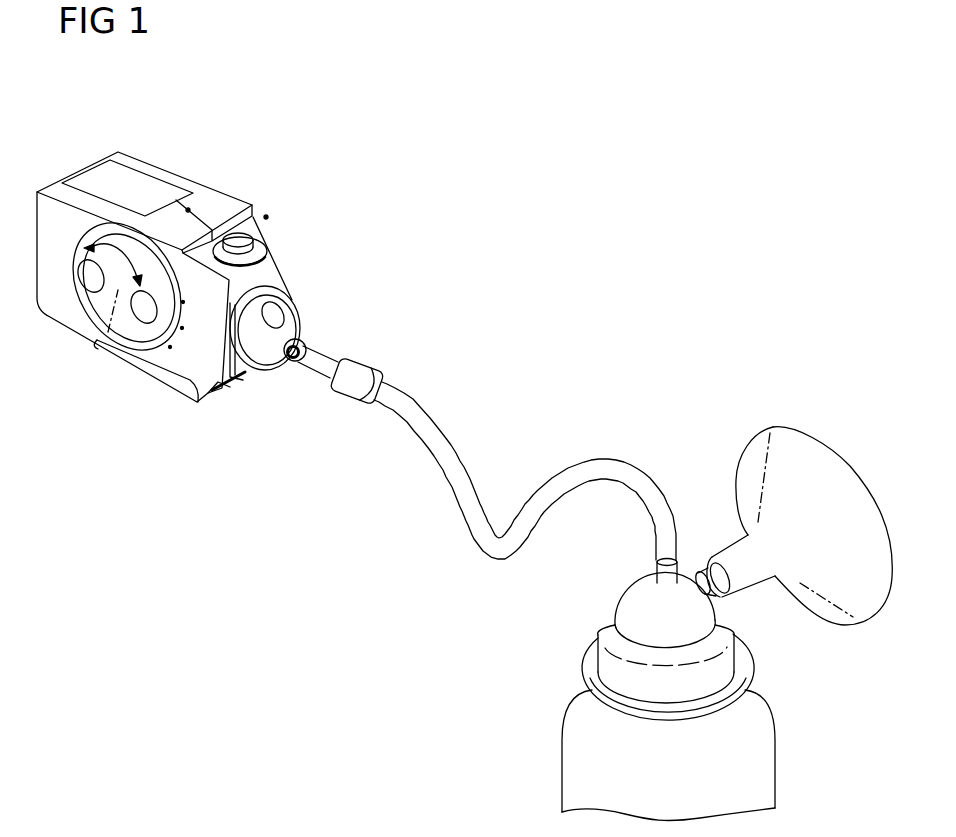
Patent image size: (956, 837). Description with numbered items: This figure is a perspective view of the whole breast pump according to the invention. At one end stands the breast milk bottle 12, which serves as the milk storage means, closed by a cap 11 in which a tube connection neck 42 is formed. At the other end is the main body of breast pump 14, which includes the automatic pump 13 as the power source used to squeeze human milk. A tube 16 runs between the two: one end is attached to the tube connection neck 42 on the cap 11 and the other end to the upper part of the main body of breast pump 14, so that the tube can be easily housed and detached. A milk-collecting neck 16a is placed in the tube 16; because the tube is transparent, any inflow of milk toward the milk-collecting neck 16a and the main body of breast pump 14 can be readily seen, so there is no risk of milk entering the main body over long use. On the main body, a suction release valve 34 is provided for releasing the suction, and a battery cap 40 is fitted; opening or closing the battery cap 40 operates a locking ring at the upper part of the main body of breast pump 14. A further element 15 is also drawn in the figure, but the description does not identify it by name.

The cap 11 is at (613, 638).
The breast milk bottle 12 is at (577, 748).
The automatic pump 13 is at (109, 335).
The main body of breast pump 14 is at (185, 367).
The suction cup / bell 15 is at (726, 416).
The tube 16 is at (438, 437).
The milk-collecting neck 16a is at (363, 361).
The suction release valve 34 is at (268, 214).
The battery cap 40 is at (204, 393).
The tube connection neck 42 is at (293, 362).